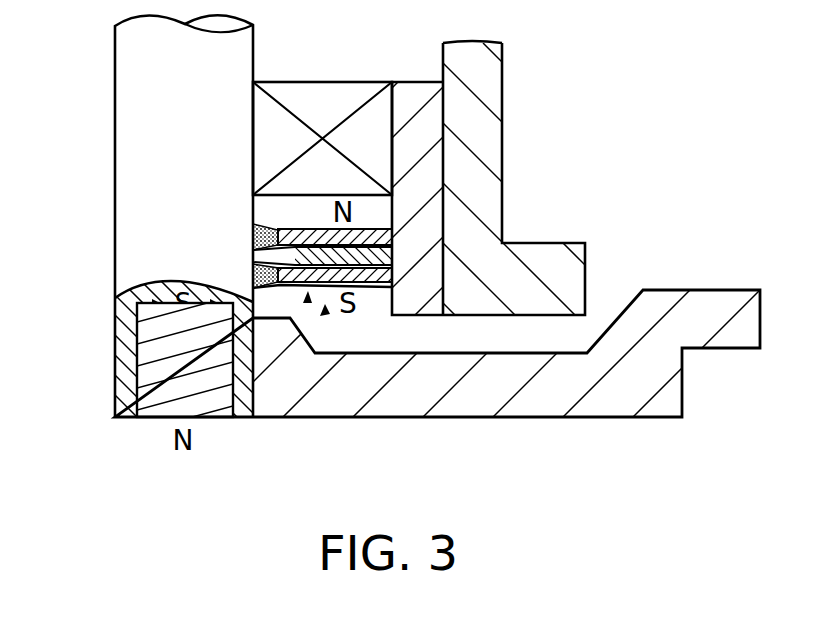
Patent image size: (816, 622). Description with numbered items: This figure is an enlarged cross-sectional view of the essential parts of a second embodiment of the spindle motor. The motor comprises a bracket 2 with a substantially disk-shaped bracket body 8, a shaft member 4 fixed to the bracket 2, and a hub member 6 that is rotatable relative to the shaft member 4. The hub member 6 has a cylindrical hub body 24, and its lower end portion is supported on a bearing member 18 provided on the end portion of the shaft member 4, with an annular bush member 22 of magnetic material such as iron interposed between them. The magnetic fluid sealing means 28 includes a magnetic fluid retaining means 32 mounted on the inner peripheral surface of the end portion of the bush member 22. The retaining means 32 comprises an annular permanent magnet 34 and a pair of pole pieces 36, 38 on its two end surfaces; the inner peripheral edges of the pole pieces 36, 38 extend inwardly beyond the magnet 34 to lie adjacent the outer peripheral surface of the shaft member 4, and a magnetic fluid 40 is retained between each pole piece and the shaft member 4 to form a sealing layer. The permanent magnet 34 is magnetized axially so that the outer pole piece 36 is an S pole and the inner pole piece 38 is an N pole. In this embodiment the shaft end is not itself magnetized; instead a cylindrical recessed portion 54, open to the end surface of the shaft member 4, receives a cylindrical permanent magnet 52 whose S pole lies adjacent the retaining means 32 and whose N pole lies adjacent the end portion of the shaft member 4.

The bracket 2 is at (533, 421).
The shaft member 4 is at (111, 151).
The hub member 6 is at (507, 175).
The bracket body 8 is at (461, 388).
The bearing member 18 is at (345, 102).
The bush member 22 is at (423, 123).
The hub body 24 is at (490, 138).
The magnetic fluid sealing means 28 is at (326, 310).
The magnetic fluid retaining means 32 is at (307, 298).
The permanent magnet 34 is at (380, 258).
The outer pole piece 36 is at (375, 280).
The inner pole piece 38 is at (305, 229).
The magnetic fluid 40 is at (255, 235).
The permanent magnet 52 is at (160, 377).
The recessed portion 54 is at (130, 305).